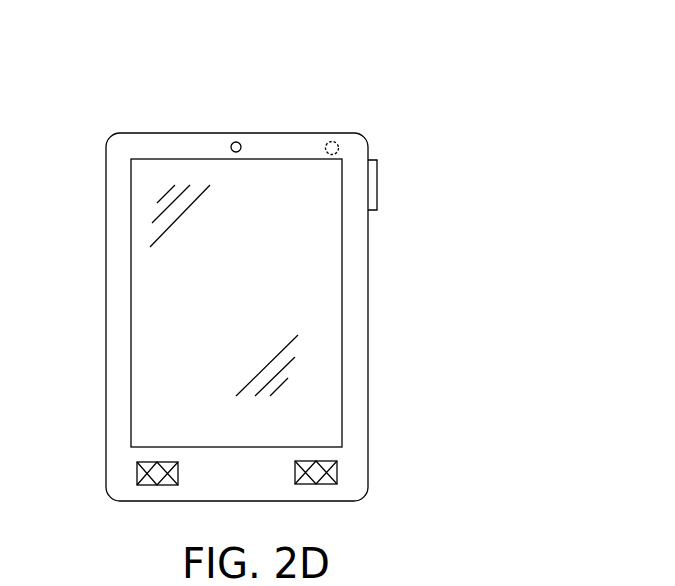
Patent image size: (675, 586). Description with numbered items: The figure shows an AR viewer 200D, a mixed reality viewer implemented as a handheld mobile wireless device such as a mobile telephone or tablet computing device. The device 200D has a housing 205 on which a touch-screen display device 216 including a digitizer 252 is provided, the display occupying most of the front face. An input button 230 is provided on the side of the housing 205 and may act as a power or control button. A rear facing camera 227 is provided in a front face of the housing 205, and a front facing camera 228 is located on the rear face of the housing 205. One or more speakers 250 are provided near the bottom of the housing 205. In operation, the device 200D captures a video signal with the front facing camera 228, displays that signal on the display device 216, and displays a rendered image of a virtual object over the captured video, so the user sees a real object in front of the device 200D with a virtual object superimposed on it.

The AR viewer 200D is at (368, 262).
The housing 205 is at (106, 226).
The touch-screen display device 216 is at (335, 347).
The digitizer 252 is at (146, 330).
The rear facing camera 227 is at (236, 141).
The front facing camera 228 is at (332, 141).
The input button 230 is at (377, 185).
The speakers 250 is at (337, 469).